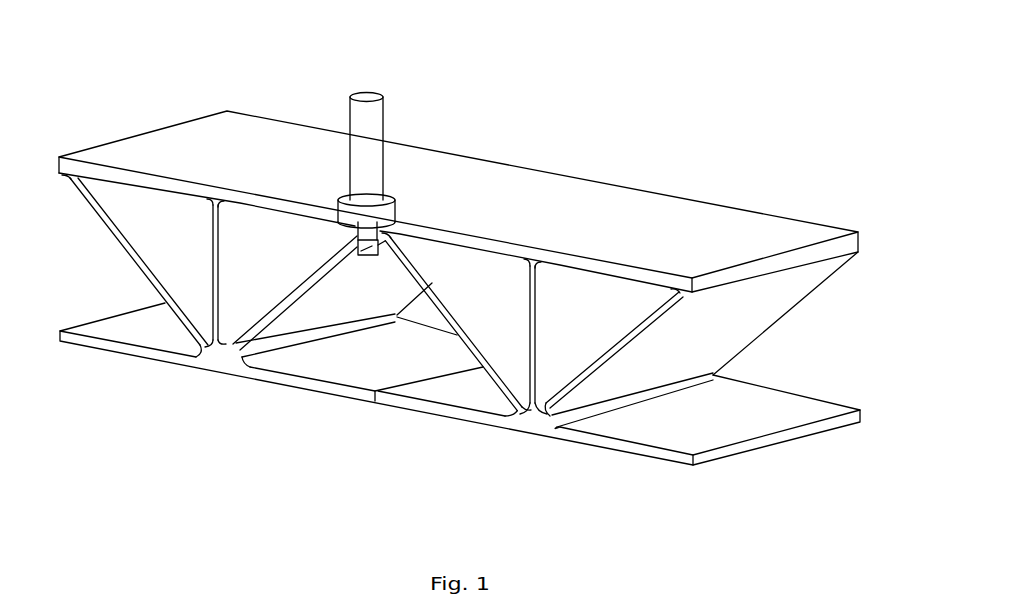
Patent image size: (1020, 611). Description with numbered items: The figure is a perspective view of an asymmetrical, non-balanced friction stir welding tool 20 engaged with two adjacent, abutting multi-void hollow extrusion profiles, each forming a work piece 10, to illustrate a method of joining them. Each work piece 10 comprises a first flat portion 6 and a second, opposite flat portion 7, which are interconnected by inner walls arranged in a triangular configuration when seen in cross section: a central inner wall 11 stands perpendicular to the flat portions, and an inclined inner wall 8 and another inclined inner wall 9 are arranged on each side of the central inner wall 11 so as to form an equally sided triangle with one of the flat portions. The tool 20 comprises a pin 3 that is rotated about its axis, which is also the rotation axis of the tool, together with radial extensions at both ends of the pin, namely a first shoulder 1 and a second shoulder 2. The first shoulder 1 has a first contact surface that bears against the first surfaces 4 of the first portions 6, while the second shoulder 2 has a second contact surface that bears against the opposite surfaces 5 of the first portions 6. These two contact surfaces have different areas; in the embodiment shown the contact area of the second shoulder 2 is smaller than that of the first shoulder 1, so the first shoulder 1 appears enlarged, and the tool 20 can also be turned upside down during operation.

The work piece 10 is at (139, 102).
The first surfaces of first portions 4 is at (695, 213).
The first portions of the work pieces 6 is at (470, 243).
The FSW tool 20 is at (372, 123).
The first shoulder 1 is at (327, 203).
The opposite surfaces of first portions 5 is at (372, 250).
The second shoulder 2 is at (358, 250).
The pin 3 is at (355, 234).
The central inner wall 11 is at (558, 335).
The inclined inner wall 9 is at (470, 372).
The inclined inner wall 8 is at (585, 380).
The second portions of the work pieces 7 is at (483, 420).